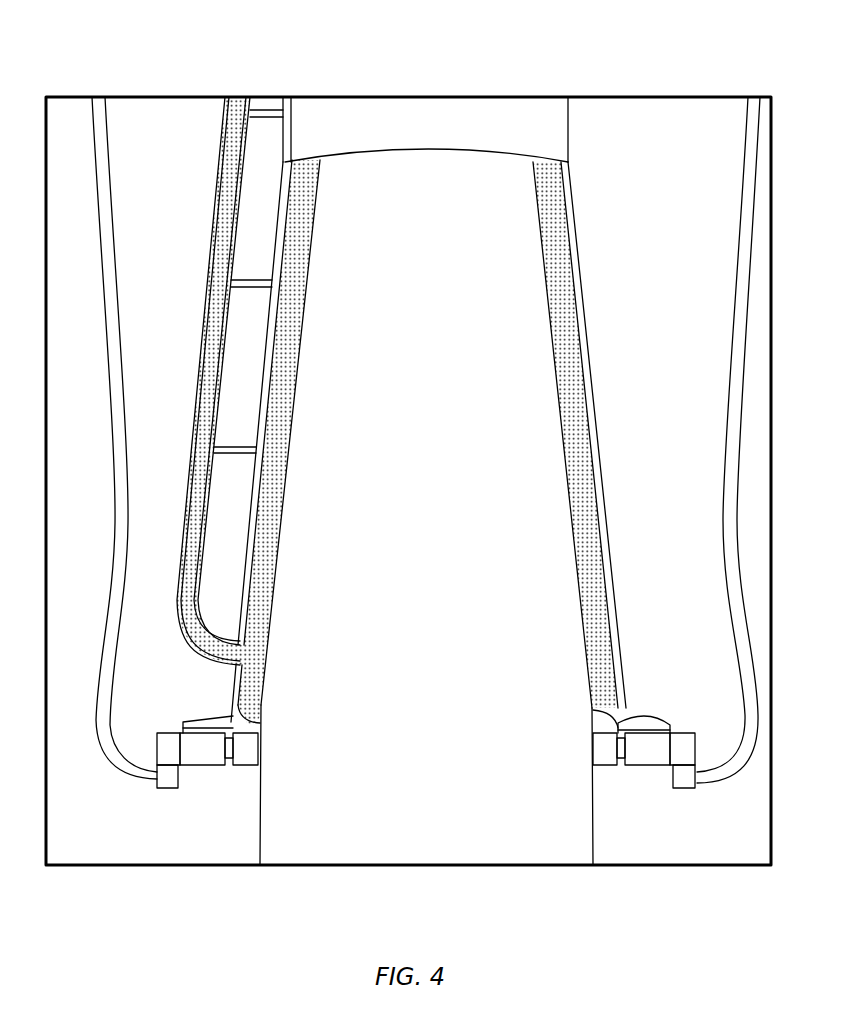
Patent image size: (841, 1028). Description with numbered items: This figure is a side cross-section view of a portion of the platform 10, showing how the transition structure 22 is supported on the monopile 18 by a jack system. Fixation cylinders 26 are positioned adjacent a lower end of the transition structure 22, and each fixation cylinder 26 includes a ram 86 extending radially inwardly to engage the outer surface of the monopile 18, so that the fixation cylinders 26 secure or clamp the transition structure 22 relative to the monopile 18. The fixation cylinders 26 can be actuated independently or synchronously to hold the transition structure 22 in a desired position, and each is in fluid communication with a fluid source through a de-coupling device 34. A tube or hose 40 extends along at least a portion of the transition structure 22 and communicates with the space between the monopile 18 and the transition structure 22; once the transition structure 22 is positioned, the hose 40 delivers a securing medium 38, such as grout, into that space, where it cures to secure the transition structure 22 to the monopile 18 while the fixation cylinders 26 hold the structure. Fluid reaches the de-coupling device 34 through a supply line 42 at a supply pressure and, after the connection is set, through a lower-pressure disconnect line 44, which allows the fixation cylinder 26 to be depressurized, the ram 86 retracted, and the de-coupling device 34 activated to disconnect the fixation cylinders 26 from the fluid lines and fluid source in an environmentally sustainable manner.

The assembly 10 is at (732, 58).
The monopile 18 is at (468, 838).
The transition structure 22 is at (571, 123).
The fixation cylinder 26 is at (204, 767).
The de-coupling device 34 is at (165, 790).
The securing medium 38 is at (283, 365).
The tube or hose 40 is at (226, 218).
The supply line 42 is at (118, 766).
The disconnect line 44 is at (117, 713).
The ram 86 is at (250, 754).